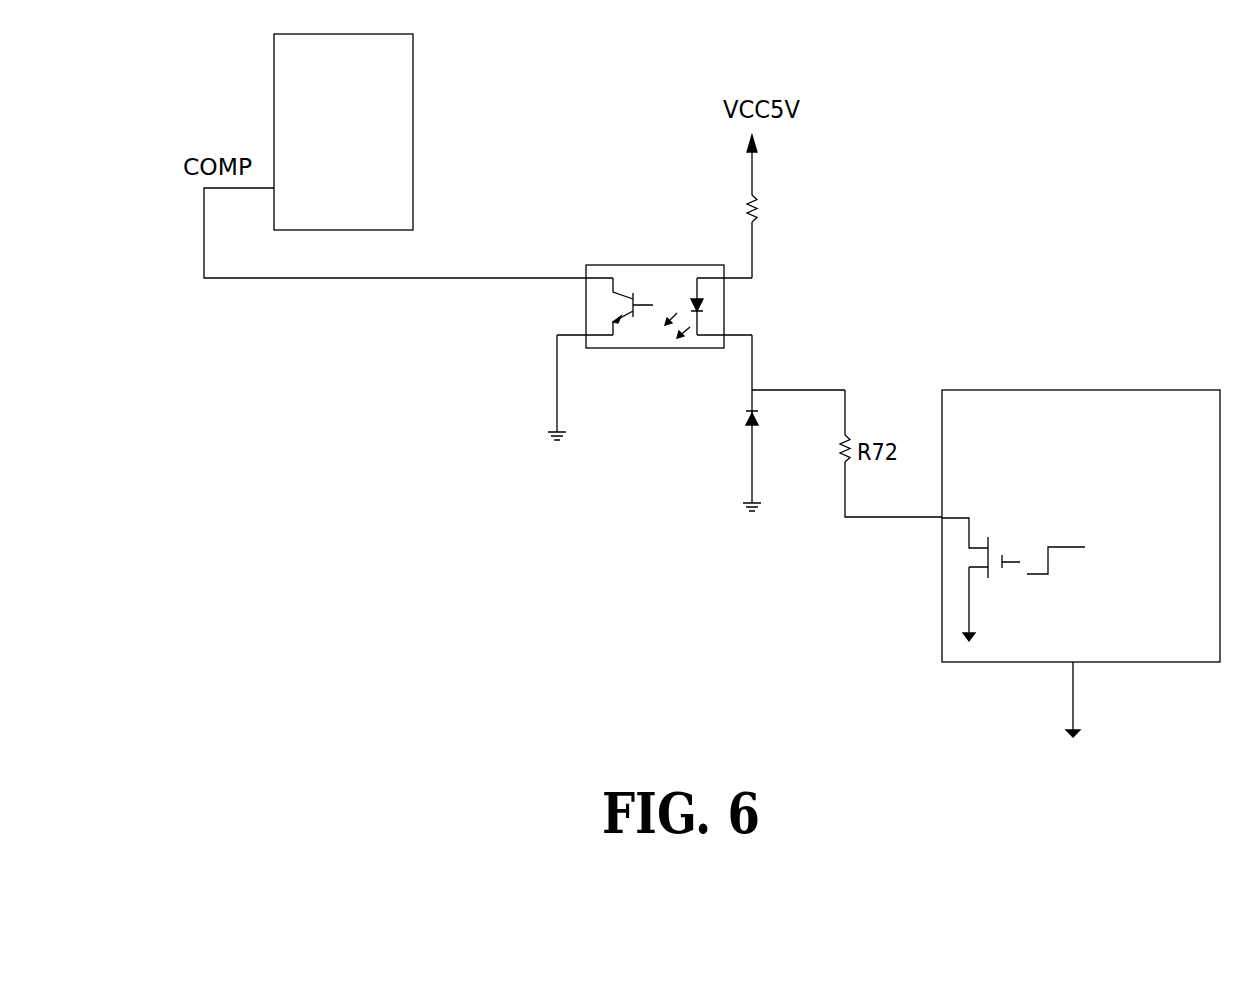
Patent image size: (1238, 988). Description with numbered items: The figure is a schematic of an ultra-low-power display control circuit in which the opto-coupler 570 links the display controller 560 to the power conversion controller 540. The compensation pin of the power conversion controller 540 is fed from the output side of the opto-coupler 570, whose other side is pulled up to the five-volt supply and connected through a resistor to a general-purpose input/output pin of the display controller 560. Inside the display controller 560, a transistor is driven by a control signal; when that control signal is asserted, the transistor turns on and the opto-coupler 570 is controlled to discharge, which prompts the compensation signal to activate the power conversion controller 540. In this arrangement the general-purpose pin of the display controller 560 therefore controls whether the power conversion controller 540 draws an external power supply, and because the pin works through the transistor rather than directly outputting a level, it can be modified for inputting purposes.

The power conversion controller 540 is at (274, 85).
The display controller 560 is at (1048, 388).
The opto-coupler 570 is at (636, 263).